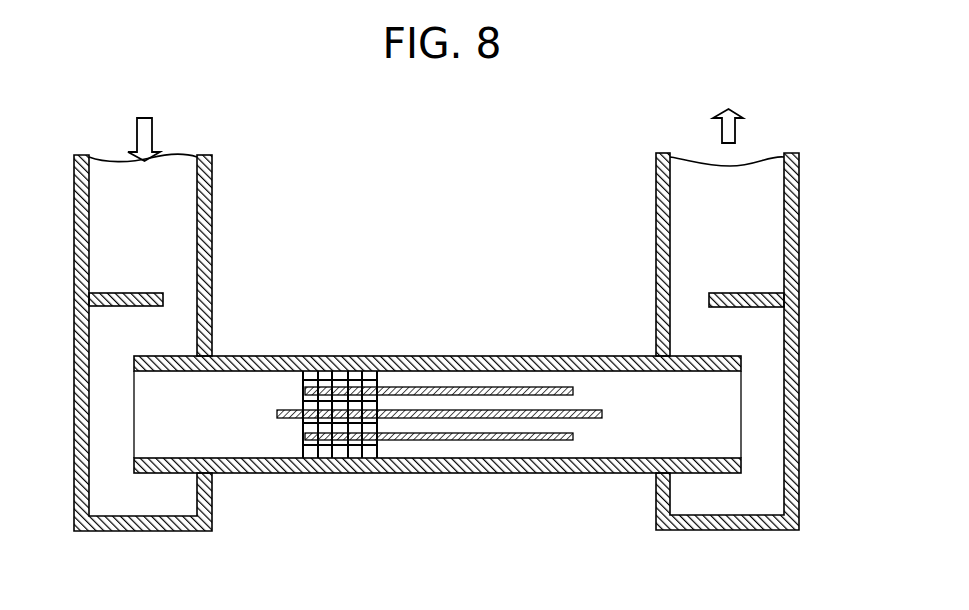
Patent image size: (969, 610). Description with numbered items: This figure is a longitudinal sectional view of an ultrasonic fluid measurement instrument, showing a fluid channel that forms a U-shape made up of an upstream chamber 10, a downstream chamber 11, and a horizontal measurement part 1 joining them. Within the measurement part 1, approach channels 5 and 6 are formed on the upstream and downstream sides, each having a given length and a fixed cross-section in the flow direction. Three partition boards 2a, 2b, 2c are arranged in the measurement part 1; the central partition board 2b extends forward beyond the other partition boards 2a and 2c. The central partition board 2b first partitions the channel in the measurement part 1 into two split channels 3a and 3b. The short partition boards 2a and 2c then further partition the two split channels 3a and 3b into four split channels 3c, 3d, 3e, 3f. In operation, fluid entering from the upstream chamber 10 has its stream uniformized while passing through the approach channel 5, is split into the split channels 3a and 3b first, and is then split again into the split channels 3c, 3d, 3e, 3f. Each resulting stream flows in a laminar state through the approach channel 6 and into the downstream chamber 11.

The measurement part 1 is at (510, 360).
The partition board 2a is at (560, 387).
The central partition board 2b is at (595, 409).
The partition board 2c is at (567, 440).
The split channel 3a is at (285, 392).
The split channel 3b is at (285, 440).
The split channel 3c is at (398, 380).
The split channel 3d is at (420, 403).
The split channel 3e is at (438, 427).
The split channel 3f is at (468, 447).
The approach channel 5 is at (170, 443).
The approach channel 6 is at (707, 427).
The upstream chamber 10 is at (100, 430).
The downstream chamber 11 is at (760, 333).